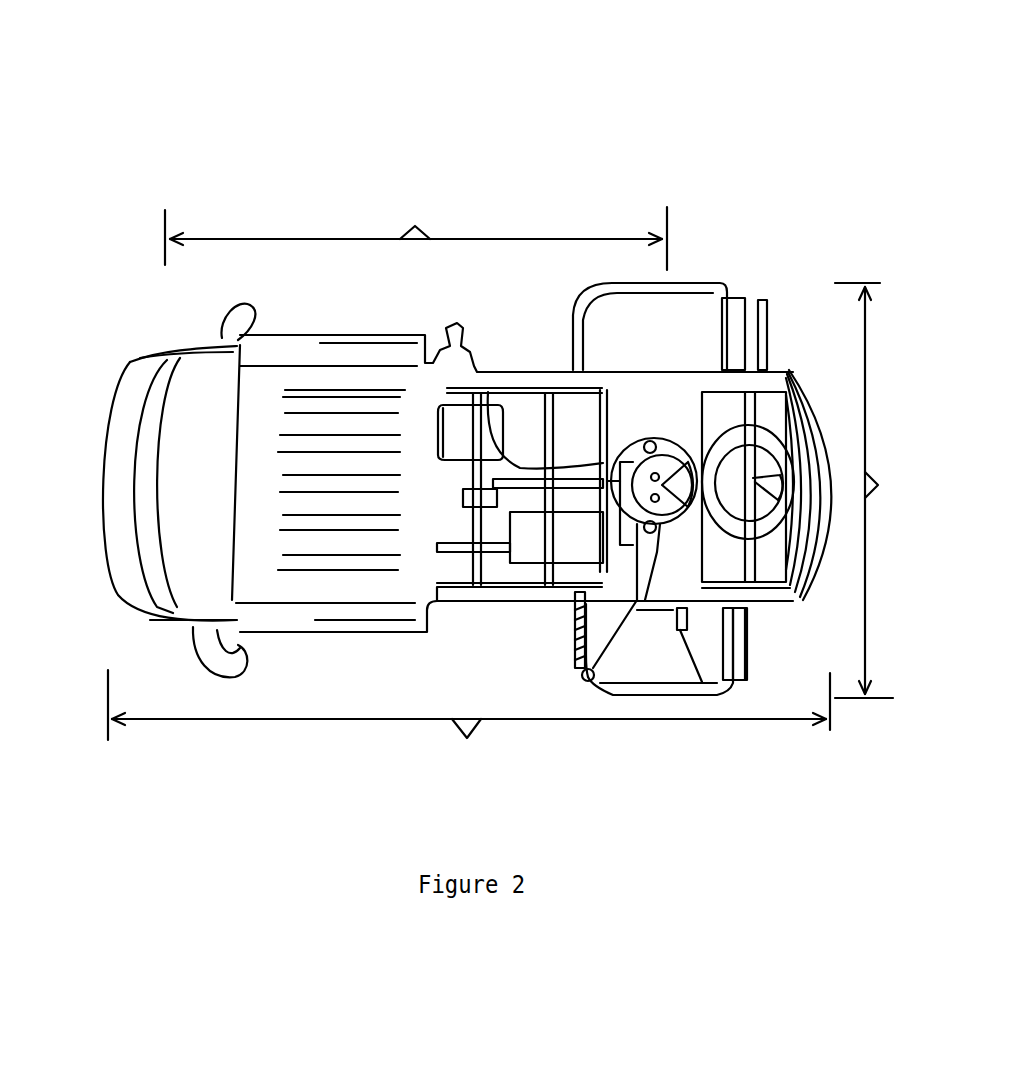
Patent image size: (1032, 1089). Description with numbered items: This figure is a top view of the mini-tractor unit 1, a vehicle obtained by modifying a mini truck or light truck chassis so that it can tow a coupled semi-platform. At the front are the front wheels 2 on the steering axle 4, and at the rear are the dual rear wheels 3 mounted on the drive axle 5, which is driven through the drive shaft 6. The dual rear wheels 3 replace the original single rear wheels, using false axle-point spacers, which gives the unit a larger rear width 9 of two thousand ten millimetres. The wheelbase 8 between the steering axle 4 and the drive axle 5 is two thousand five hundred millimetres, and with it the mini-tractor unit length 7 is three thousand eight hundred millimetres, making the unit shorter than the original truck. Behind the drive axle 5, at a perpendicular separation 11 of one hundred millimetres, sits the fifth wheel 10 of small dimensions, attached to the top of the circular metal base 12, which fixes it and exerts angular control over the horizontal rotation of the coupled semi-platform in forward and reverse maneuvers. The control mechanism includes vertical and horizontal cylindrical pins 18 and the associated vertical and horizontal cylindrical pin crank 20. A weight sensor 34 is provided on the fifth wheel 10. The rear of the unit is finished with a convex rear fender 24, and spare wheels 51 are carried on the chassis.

The mini-tractor unit 1 is at (247, 108).
The front wheels 2 is at (175, 335).
The dual rear wheels 3 is at (683, 277).
The steering axle 4 is at (187, 342).
The drive axle 5 is at (680, 277).
The drive shaft 6 is at (488, 392).
The mini-tractor unit length 7 is at (469, 743).
The wheelbase 8 is at (416, 215).
The rear width 9 is at (879, 490).
The fifth wheel 10 is at (587, 680).
The perpendicular separation 11 is at (640, 440).
The base for fifth wheel 12 is at (658, 437).
The vertical and horizontal cylindrical pins 18 is at (575, 633).
The vertical and horizontal cylindrical pin crank 20 is at (722, 678).
The convex rear fender 24 is at (815, 580).
The weight sensor 34 is at (612, 505).
The spare wheels 51 is at (790, 370).